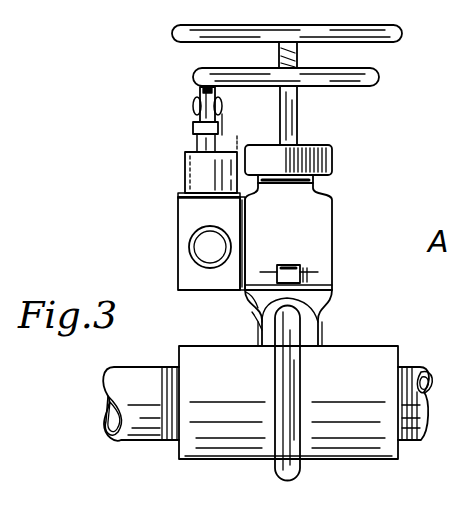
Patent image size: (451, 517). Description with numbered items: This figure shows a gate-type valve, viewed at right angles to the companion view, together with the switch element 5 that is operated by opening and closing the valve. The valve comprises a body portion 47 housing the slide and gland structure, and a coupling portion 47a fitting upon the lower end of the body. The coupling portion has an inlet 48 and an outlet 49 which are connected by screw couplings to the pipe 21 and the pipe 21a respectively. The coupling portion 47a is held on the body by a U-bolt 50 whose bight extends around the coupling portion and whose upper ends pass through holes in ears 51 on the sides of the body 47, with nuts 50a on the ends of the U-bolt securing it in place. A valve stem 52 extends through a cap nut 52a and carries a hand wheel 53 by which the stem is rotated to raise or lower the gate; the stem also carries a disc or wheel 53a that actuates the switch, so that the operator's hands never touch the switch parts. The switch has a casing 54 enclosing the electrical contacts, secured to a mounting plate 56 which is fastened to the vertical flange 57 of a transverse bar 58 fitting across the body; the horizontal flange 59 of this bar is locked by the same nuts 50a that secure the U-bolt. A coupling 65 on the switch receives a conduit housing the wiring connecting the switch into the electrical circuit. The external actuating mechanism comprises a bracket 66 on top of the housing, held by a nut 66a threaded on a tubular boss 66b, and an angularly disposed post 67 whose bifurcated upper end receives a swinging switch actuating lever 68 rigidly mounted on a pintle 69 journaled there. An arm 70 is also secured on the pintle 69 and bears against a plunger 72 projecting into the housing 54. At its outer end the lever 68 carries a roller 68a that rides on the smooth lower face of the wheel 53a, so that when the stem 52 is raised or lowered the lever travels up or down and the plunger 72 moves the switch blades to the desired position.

The switch element 5 is at (211, 243).
The pipe 21 is at (148, 366).
The pipe 21a is at (414, 367).
The body portion 47 is at (320, 341).
The coupling portion 47a is at (250, 464).
The inlet 48 is at (190, 452).
The outlet 49 is at (360, 456).
The U-bolt 50 is at (300, 475).
The nuts 50a is at (305, 275).
The ears 51 is at (321, 304).
The valve stem 52 is at (298, 116).
The cap nut 52a is at (332, 160).
The hand wheel 53 is at (398, 31).
The disc or wheel 53a is at (378, 77).
The switch casing 54 is at (185, 215).
The mounting plate 56 is at (243, 243).
The vertical flange 57 is at (246, 226).
The transverse bar 58 is at (240, 294).
The horizontal flange 59 is at (258, 311).
The coupling 65 is at (192, 256).
The bracket 66 is at (178, 196).
The nut 66a is at (185, 172).
The tubular boss 66b is at (238, 146).
The post 67 is at (194, 118).
The switch actuating lever 68 is at (198, 108).
The roller 68a is at (203, 90).
The pintle 69 is at (222, 134).
The arm 70 is at (193, 130).
The plunger 72 is at (197, 144).